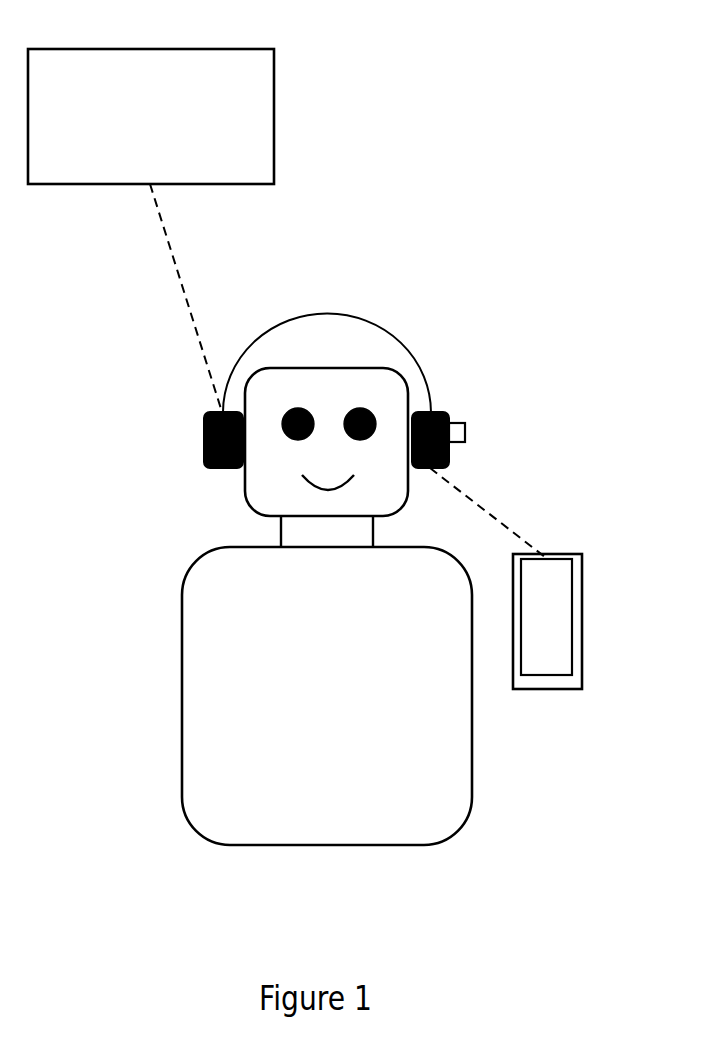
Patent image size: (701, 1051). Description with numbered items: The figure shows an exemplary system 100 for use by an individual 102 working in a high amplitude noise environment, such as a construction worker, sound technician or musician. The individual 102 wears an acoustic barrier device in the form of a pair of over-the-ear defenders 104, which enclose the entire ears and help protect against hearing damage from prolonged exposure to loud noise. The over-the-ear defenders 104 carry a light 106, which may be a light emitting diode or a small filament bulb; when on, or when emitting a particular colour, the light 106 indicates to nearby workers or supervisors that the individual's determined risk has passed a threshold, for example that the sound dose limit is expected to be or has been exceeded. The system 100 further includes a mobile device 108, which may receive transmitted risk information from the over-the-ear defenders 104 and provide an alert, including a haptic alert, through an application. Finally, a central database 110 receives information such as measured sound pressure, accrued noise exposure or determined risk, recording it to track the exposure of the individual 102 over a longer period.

The system 100 is at (474, 201).
The individual 102 is at (182, 676).
The over-the-ear defenders 104 is at (204, 442).
The light 106 is at (466, 428).
The mobile device 108 is at (545, 689).
The central database 110 is at (274, 116).